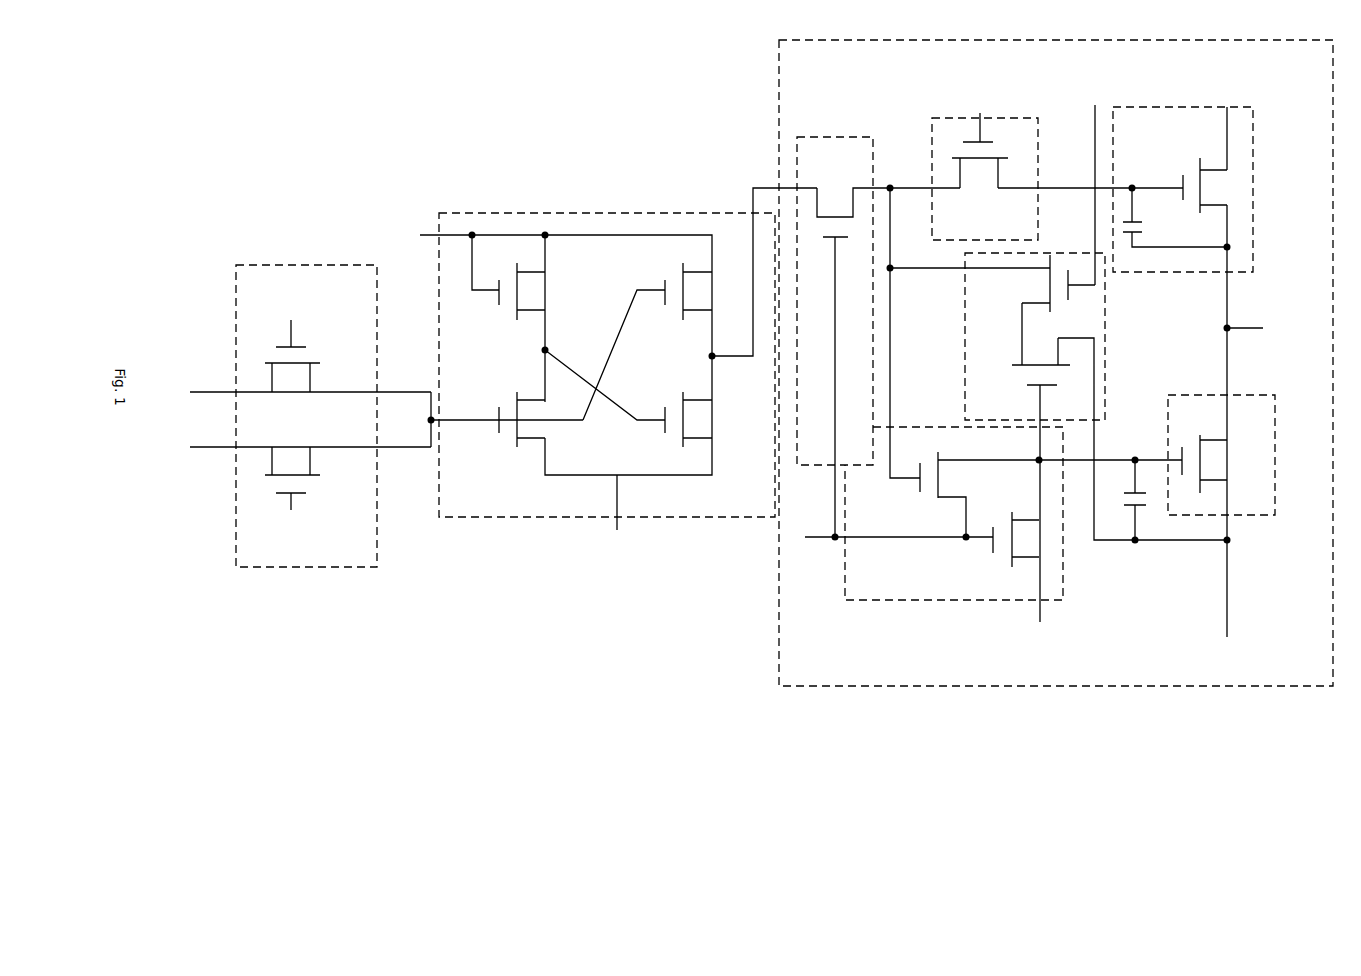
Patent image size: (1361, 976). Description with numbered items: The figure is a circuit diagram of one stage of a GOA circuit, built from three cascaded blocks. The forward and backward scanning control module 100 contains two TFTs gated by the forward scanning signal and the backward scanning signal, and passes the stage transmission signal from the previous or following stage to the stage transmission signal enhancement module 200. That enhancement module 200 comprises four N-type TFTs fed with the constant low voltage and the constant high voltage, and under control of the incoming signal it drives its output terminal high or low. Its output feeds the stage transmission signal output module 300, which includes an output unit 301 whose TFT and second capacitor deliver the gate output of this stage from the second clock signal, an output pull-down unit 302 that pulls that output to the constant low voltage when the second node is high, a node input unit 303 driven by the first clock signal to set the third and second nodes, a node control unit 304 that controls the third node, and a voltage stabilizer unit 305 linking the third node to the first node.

The forward and backward scanning control module 100 is at (295, 567).
The stage transmission signal enhancement module 200 is at (553, 517).
The stage transmission signal output module 300 is at (1056, 400).
The output unit 301 is at (1253, 203).
The output pull-down unit 302 is at (1275, 477).
The node input unit 303 is at (898, 601).
The node control unit 304 is at (1105, 355).
The voltage stabilizer unit 305 is at (1018, 118).